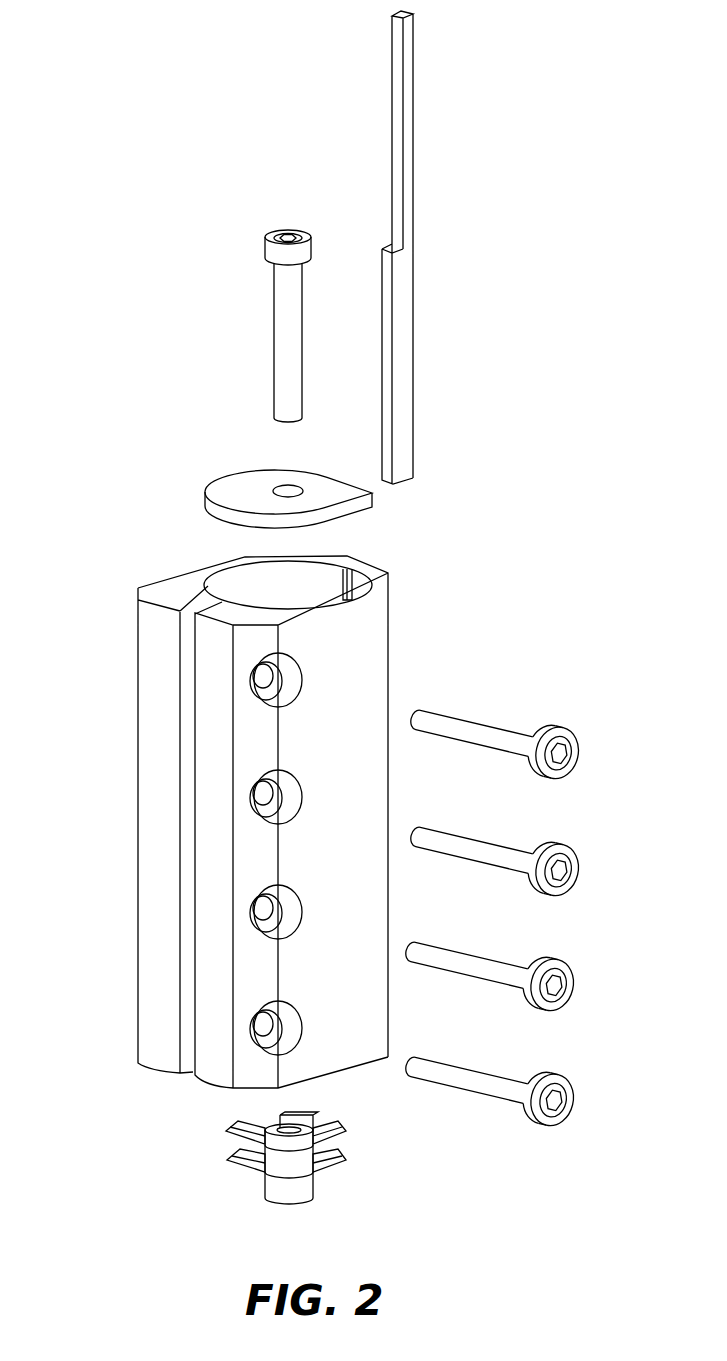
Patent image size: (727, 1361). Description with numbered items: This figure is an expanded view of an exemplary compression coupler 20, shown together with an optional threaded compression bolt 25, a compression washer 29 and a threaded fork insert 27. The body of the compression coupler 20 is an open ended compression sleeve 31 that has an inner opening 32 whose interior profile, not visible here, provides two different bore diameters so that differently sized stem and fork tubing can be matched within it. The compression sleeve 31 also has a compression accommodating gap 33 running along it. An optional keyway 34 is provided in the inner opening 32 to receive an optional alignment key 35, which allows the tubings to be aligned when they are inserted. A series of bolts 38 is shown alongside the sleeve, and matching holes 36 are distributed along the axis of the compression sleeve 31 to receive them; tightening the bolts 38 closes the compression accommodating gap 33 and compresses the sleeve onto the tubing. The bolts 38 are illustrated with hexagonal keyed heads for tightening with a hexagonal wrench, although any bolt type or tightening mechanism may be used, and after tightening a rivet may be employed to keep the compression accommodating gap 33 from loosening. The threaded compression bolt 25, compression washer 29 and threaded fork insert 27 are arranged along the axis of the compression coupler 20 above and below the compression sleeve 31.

The compression coupler 20 is at (675, 123).
The threaded compression bolt 25 is at (278, 299).
The threaded fork insert 27 is at (230, 1151).
The compression washer 29 is at (220, 483).
The compression sleeve 31 is at (152, 714).
The inner opening 32 is at (237, 573).
The compression accommodating gap 33 is at (183, 628).
The keyway 34 is at (345, 574).
The alignment key 35 is at (405, 275).
The holes 36 is at (290, 682).
The bolts 38 is at (518, 725).